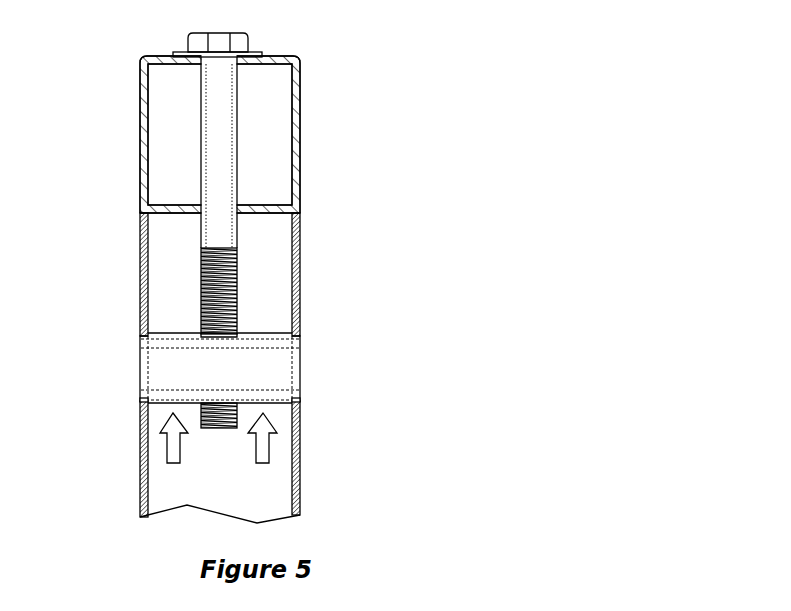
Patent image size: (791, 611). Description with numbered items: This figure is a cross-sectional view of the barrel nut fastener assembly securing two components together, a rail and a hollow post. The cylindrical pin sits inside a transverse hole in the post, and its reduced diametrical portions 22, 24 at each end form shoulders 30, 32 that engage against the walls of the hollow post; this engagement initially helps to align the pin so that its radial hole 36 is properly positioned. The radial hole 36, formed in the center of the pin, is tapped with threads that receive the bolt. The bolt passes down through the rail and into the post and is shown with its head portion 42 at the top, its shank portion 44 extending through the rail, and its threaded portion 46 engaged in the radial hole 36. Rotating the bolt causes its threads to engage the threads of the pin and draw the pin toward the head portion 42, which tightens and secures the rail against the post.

The reduced diametrical portion 22 is at (125, 379).
The reduced diametrical portion 24 is at (320, 376).
The shoulder 30 is at (145, 403).
The shoulder 32 is at (297, 410).
The radial hole 36 is at (220, 335).
The head portion 42 is at (262, 33).
The shank portion 44 is at (252, 146).
The threaded portion 46 is at (250, 298).